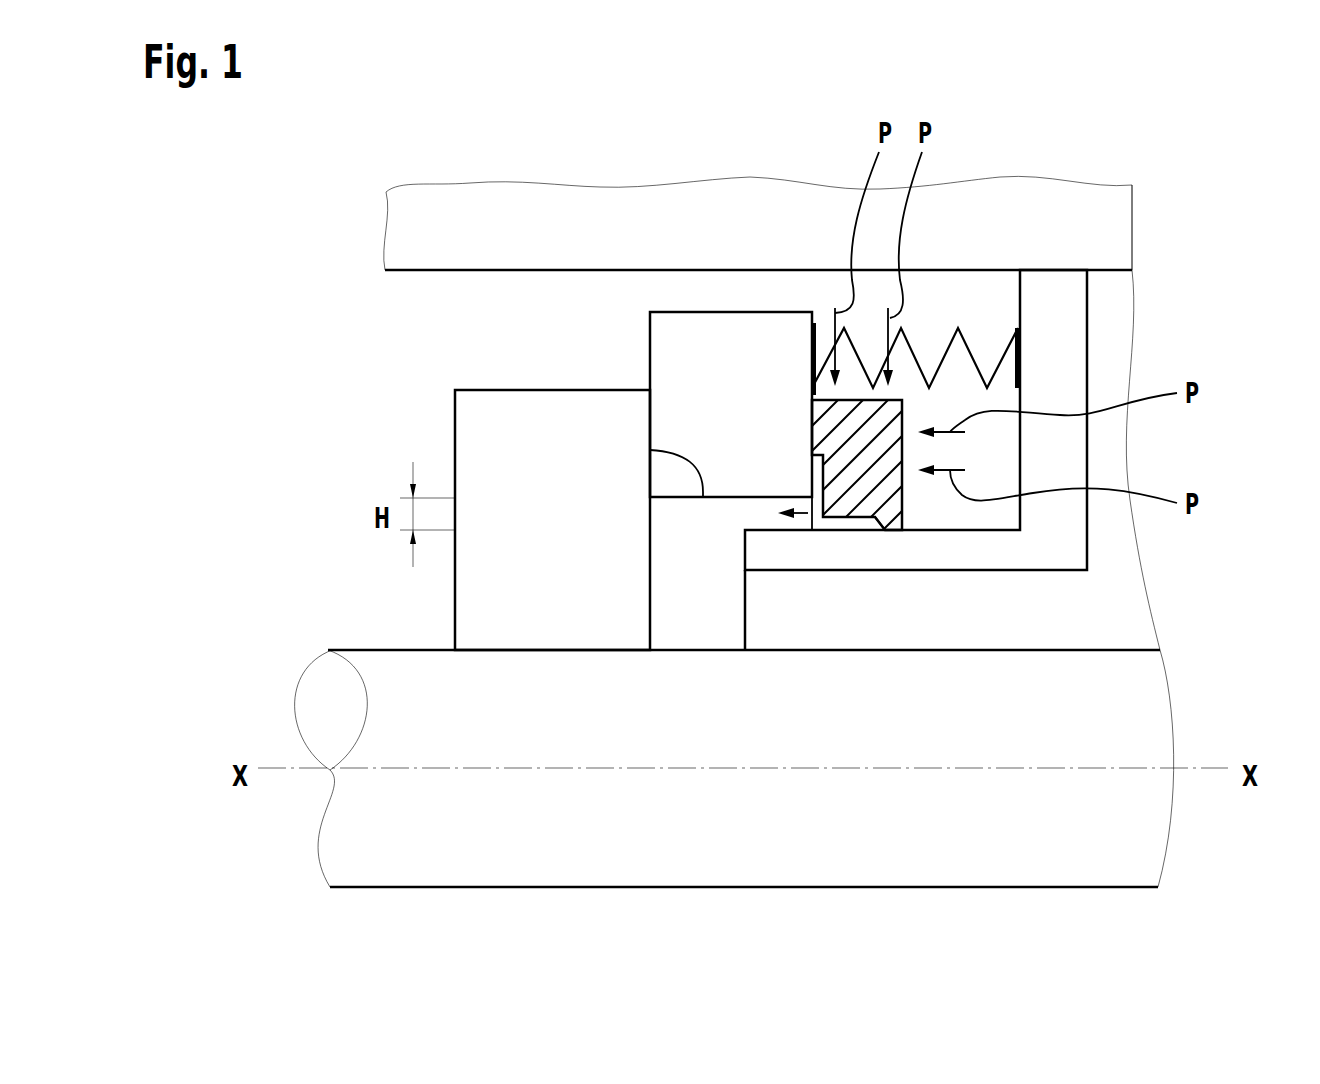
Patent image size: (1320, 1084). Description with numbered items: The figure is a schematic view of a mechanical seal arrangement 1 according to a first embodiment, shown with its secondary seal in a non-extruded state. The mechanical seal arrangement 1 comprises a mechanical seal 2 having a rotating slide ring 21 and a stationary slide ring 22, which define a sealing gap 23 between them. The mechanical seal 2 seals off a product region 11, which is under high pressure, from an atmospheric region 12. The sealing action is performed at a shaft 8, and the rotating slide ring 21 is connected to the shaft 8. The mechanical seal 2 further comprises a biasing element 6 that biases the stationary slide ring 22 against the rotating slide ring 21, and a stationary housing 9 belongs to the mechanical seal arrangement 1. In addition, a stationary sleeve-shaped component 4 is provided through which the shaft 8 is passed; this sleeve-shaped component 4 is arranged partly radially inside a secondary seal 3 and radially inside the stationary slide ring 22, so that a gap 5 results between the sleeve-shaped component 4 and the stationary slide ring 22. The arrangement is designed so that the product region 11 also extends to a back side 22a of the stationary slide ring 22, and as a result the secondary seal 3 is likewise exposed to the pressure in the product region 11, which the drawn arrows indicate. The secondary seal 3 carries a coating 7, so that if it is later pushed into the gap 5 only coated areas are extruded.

The mechanical seal arrangement 1 is at (244, 212).
The mechanical seal 2 is at (614, 540).
The secondary seal 3 is at (873, 458).
The sleeve-shaped component 4 is at (985, 548).
The gap 5 is at (768, 518).
The biasing element 6 is at (973, 345).
The coating 7 is at (837, 540).
The shaft 8 is at (420, 838).
The stationary housing 9 is at (662, 227).
The product region 11 is at (310, 450).
The atmospheric region 12 is at (730, 611).
The rotating slide ring 21 is at (558, 617).
The stationary slide ring 22 is at (751, 307).
The back side of the stationary slide ring 22a is at (812, 323).
The sealing gap 23 is at (703, 497).